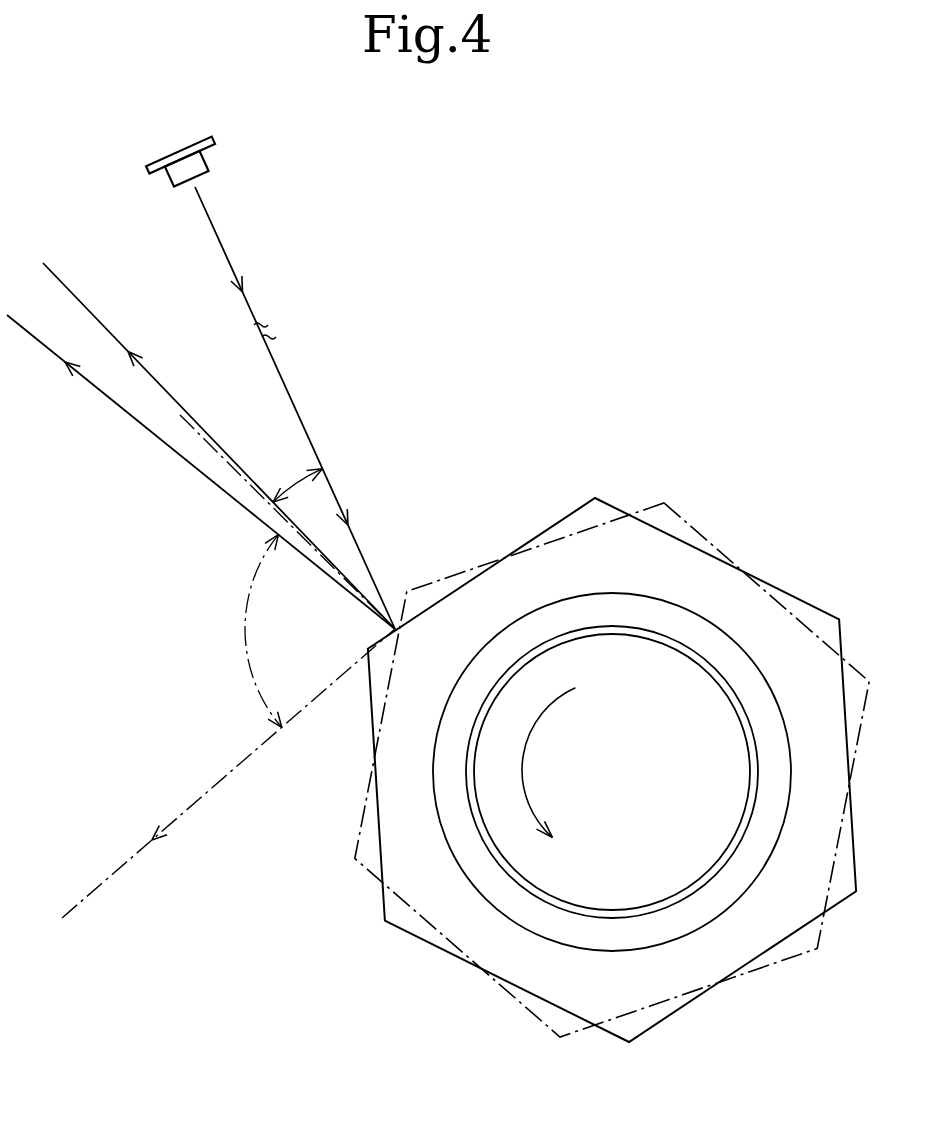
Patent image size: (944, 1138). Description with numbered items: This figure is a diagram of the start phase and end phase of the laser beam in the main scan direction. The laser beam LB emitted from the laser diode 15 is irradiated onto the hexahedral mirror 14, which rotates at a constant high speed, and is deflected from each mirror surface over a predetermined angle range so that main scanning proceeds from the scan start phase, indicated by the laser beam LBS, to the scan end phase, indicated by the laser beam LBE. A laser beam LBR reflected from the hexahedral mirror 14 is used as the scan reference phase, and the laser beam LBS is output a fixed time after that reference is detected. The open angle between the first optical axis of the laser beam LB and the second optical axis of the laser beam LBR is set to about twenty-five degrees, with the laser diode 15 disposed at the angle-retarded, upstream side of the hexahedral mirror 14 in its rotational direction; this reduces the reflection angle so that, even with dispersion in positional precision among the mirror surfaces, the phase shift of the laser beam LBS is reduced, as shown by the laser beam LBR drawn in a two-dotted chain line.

The hexahedral mirror 14 is at (452, 958).
The laser diode 15 is at (212, 160).
The laser beam LB is at (272, 347).
The laser beam at the scan reference phase LBR is at (88, 313).
The laser beam at the scan start phase LBS is at (100, 395).
The laser beam at the scan end phase LBE is at (197, 800).